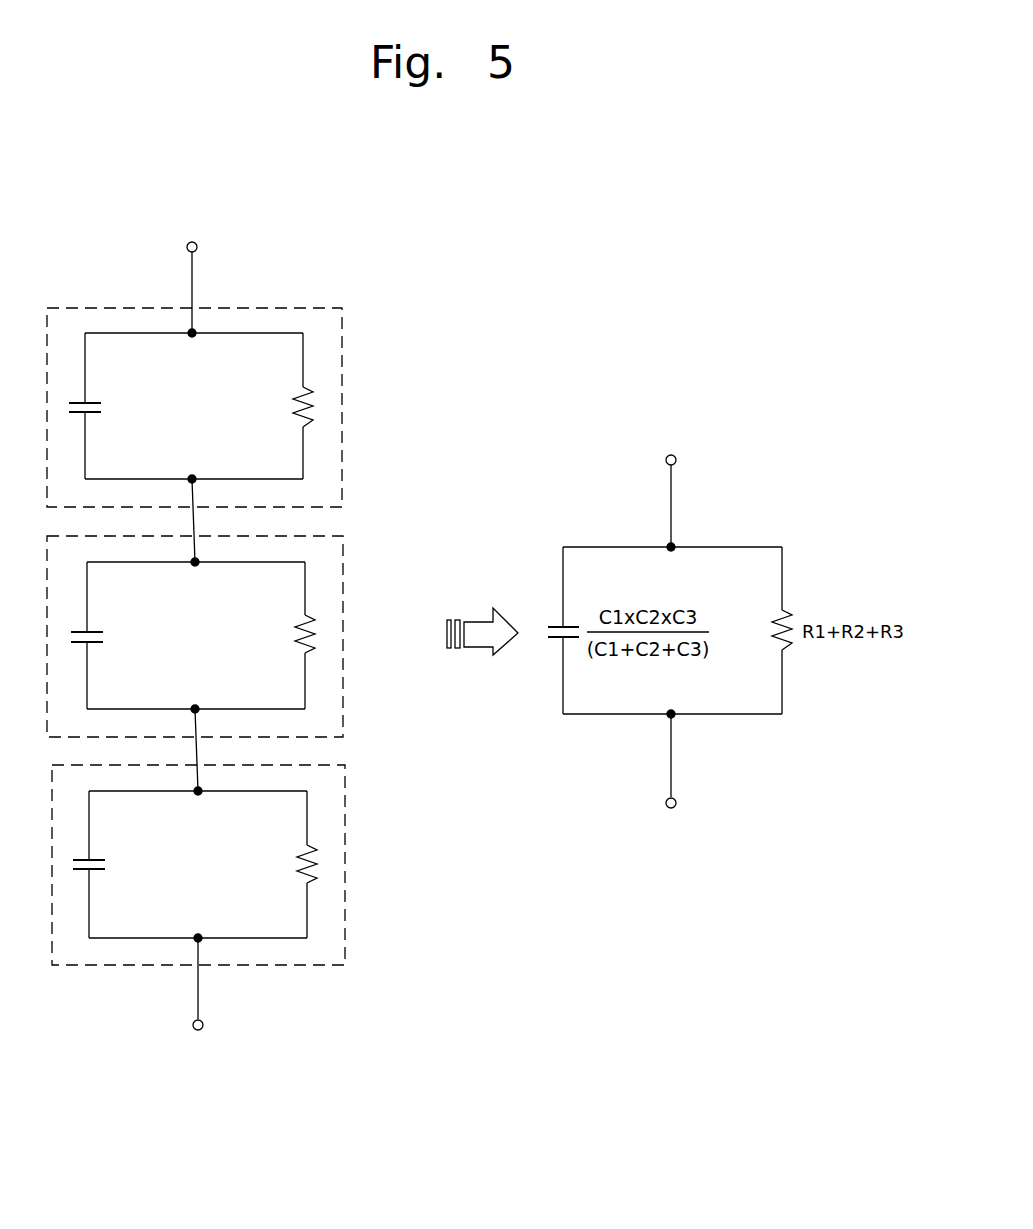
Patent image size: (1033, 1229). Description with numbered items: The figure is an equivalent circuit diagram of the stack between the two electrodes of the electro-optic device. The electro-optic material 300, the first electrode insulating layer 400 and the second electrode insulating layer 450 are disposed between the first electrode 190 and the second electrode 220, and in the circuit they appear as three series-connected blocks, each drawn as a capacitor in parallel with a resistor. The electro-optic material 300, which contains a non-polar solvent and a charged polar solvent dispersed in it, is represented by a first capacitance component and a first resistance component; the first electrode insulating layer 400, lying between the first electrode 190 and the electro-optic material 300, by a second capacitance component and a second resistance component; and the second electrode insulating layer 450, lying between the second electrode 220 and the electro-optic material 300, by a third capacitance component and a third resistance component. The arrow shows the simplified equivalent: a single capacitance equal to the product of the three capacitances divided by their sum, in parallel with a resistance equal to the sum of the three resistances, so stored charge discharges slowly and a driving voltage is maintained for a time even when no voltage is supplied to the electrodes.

The second electrode 220 is at (431, 381).
The first electrode 190 is at (435, 887).
The second electrode insulating layer 450 is at (340, 354).
The electro-optic material 300 is at (342, 583).
The first electrode insulating layer 400 is at (344, 812).